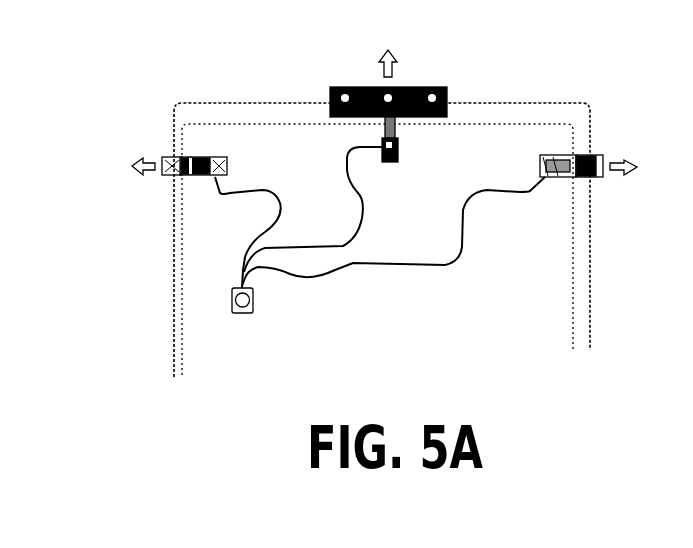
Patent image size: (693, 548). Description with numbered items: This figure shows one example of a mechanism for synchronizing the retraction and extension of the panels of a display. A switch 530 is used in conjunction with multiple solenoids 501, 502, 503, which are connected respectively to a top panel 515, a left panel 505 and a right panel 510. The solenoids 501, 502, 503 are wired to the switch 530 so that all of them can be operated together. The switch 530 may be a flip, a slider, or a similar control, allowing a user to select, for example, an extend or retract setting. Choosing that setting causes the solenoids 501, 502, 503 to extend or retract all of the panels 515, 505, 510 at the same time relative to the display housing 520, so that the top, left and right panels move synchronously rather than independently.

The solenoid 501 is at (399, 147).
The solenoid 502 is at (217, 162).
The solenoid 503 is at (550, 168).
The left panel 505 is at (182, 172).
The right panel 510 is at (593, 172).
The top panel 515 is at (410, 90).
The display housing 520 is at (233, 108).
The switch 530 is at (253, 310).